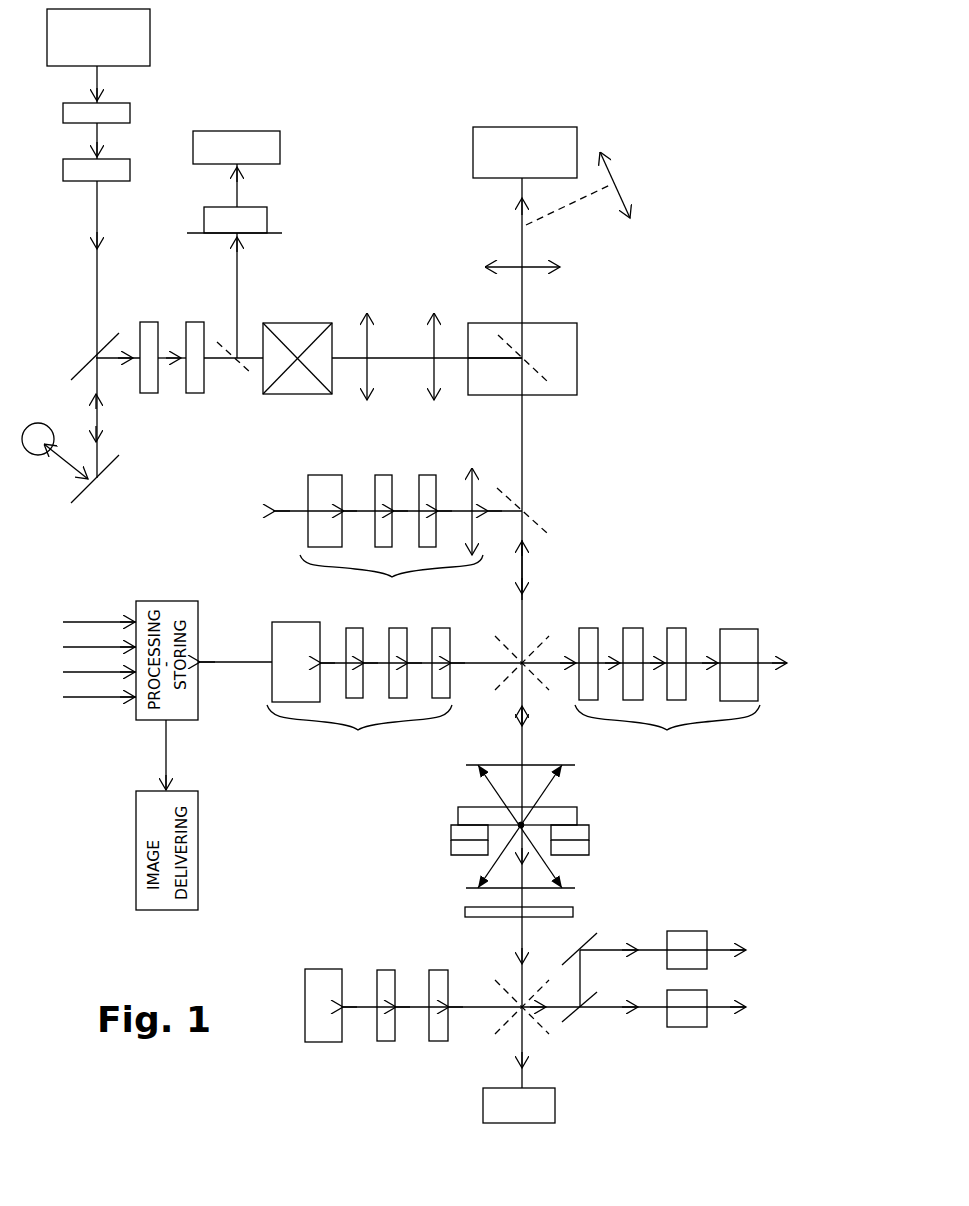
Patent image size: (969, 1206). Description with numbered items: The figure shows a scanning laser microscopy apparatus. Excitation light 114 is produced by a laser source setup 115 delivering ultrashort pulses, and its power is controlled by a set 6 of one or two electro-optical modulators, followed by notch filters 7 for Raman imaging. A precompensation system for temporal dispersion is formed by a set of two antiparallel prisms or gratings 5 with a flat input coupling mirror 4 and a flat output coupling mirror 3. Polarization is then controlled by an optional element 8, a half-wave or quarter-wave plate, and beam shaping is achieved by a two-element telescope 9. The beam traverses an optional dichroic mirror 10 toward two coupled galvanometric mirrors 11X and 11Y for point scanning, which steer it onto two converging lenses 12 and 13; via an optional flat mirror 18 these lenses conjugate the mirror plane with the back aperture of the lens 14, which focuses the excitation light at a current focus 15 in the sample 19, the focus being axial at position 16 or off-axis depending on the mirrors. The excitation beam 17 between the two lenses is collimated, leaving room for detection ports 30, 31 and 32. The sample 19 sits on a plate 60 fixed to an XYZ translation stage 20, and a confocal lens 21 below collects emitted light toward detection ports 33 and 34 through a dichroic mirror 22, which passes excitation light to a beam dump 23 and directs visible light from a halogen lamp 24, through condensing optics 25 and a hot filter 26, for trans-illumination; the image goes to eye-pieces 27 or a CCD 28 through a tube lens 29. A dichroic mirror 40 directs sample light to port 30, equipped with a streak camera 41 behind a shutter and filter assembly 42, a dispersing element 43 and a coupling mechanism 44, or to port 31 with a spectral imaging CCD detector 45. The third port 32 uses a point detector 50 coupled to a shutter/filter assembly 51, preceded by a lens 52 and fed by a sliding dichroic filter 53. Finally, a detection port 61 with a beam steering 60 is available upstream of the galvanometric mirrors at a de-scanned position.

The laser source setup 115 is at (150, 33).
The excitation light 114 is at (99, 75).
The set of electro-optical modulators 6 is at (130, 108).
The notch filters 7 is at (130, 165).
The detection port P6 61 is at (282, 146).
The beam steering / sample holder plate 60 is at (269, 219).
The CCD 28 is at (473, 150).
The eye-pieces 27 is at (612, 168).
The tube lens 29 is at (513, 262).
The flat output coupling mirror 3 is at (85, 355).
The set of two antiparallel prisms or gratings 5 is at (36, 424).
The flat input coupling mirror 4 is at (88, 490).
The polarization control element 8 is at (152, 395).
The two-element telescope 9 is at (196, 395).
The dichroic mirror 10 is at (243, 370).
The galvanometric mirror 11X is at (310, 333).
The galvanometric mirror 11Y is at (307, 378).
The converging lens 12 is at (372, 336).
The converging lens 13 is at (438, 336).
The flat mirror 18 is at (535, 374).
The point detector 50 is at (306, 485).
The coupling mechanism 44 is at (383, 475).
The shutter/filter assembly 51 is at (428, 475).
The lens 52 is at (474, 490).
The sliding dichroic filter 53 is at (530, 518).
The excitation beam 17 is at (528, 568).
The dichroic mirror 40 is at (507, 645).
The third detection port 32 is at (391, 576).
The streak camera 41 is at (271, 648).
The shutter and filter assembly 42 is at (441, 628).
The dispersing element 43 is at (397, 628).
The 2D CCD detector 45 is at (738, 629).
The detection port 30 is at (359, 688).
The detection port 31 is at (667, 730).
The detection port P4 33 is at (683, 931).
The detection port P5 34 is at (687, 1027).
The lens 14 is at (495, 786).
The current focus 15 is at (535, 818).
The axial focus position 16 is at (521, 825).
The sample 19 is at (458, 816).
The XYZ translation stage 20 is at (458, 857).
The lens 21 is at (490, 896).
The dichroic mirror 22 is at (500, 990).
The beam dump 23 is at (483, 1110).
The halogen lamp 24 is at (321, 1042).
The condensing optics 25 is at (386, 1041).
The hot filter 26 is at (440, 1041).